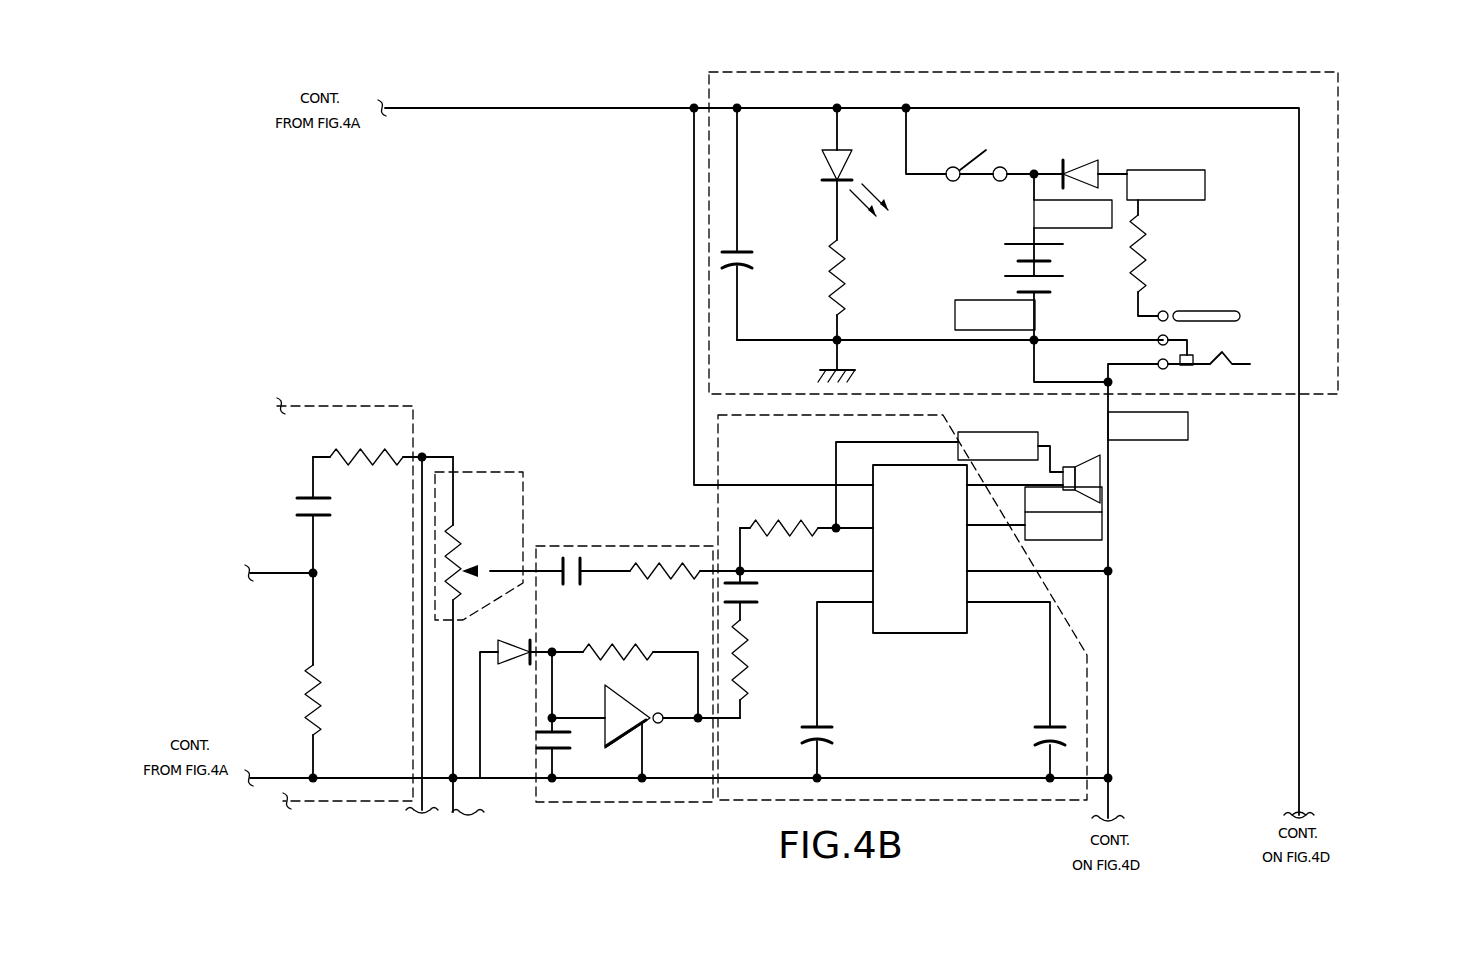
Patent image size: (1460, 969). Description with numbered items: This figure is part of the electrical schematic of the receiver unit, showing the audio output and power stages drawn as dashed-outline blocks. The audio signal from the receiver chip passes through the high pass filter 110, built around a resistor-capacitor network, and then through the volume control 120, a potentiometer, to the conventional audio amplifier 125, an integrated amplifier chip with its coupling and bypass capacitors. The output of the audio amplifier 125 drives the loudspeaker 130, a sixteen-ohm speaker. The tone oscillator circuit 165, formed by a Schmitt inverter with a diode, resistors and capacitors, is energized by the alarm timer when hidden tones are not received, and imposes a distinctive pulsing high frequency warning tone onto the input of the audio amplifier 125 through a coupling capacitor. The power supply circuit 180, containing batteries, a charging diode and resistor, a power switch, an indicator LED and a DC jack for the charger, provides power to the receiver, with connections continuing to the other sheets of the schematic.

The high pass filter 110 is at (372, 406).
The volume control 120 is at (489, 472).
The audio amplifier 125 is at (1087, 692).
The loudspeaker 130 is at (1105, 480).
The tone oscillator circuit 165 is at (601, 546).
The power supply circuit 180 is at (1338, 131).